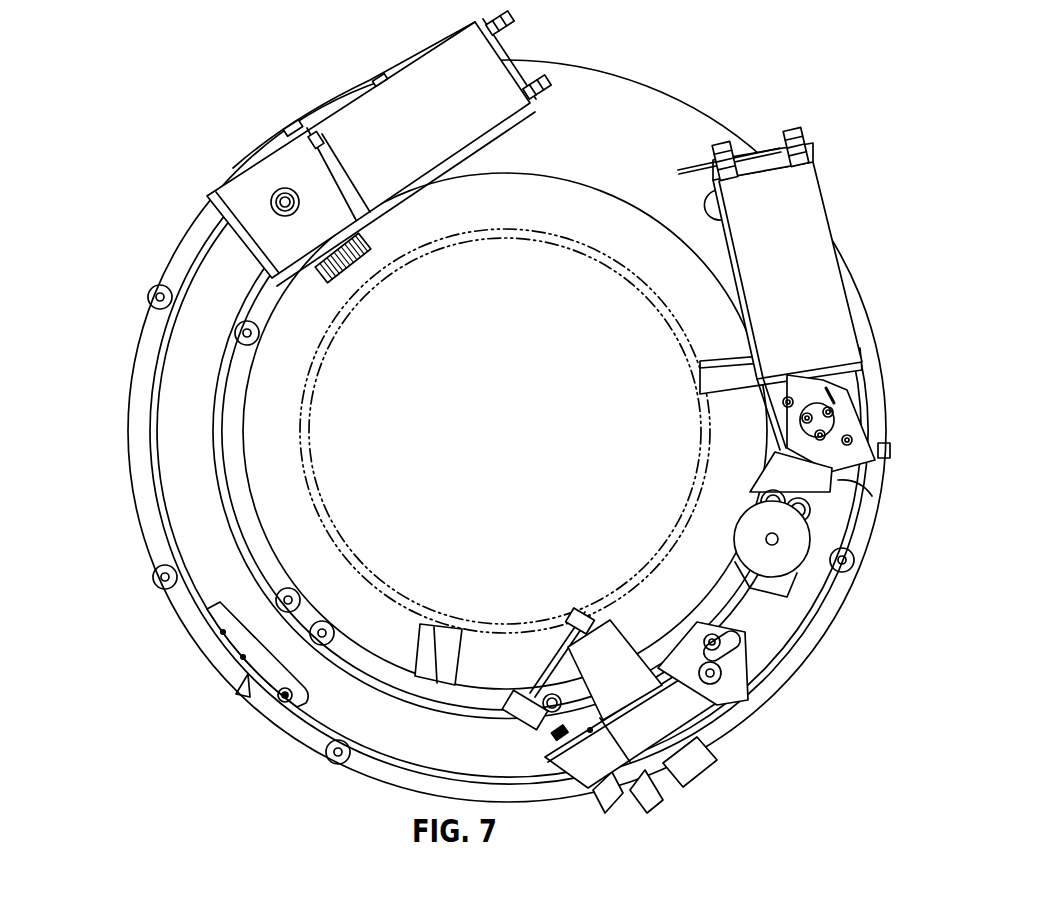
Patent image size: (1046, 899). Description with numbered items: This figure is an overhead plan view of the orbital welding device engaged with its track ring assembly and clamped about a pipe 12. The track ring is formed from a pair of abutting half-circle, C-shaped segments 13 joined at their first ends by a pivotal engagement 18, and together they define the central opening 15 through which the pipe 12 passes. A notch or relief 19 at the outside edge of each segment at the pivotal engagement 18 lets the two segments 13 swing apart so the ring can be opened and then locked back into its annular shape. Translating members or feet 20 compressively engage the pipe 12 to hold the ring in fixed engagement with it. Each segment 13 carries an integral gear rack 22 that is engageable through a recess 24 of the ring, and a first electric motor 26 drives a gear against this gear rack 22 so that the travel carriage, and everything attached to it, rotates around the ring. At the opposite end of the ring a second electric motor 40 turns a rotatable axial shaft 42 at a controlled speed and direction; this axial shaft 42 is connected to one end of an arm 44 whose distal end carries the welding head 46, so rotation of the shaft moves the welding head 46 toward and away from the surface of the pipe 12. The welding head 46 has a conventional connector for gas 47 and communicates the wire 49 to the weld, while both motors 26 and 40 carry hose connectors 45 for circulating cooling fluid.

The pipe 12 is at (663, 540).
The segments 13 is at (198, 622).
The opening 15 is at (494, 447).
The pivotal engagement 18 is at (240, 637).
The notch or relief 19 is at (253, 673).
The translating members or feet 20 is at (366, 280).
The gear rack 22 is at (177, 282).
The recess 24 is at (178, 427).
The first electric motor 26 is at (420, 62).
The second electric motor 40 is at (820, 248).
The axial shaft 42 is at (833, 415).
The arm 44 is at (850, 490).
The hose connectors 45 is at (516, 22).
The welding head 46 is at (693, 717).
The gas connector 47 is at (533, 663).
The wire 49 is at (567, 616).